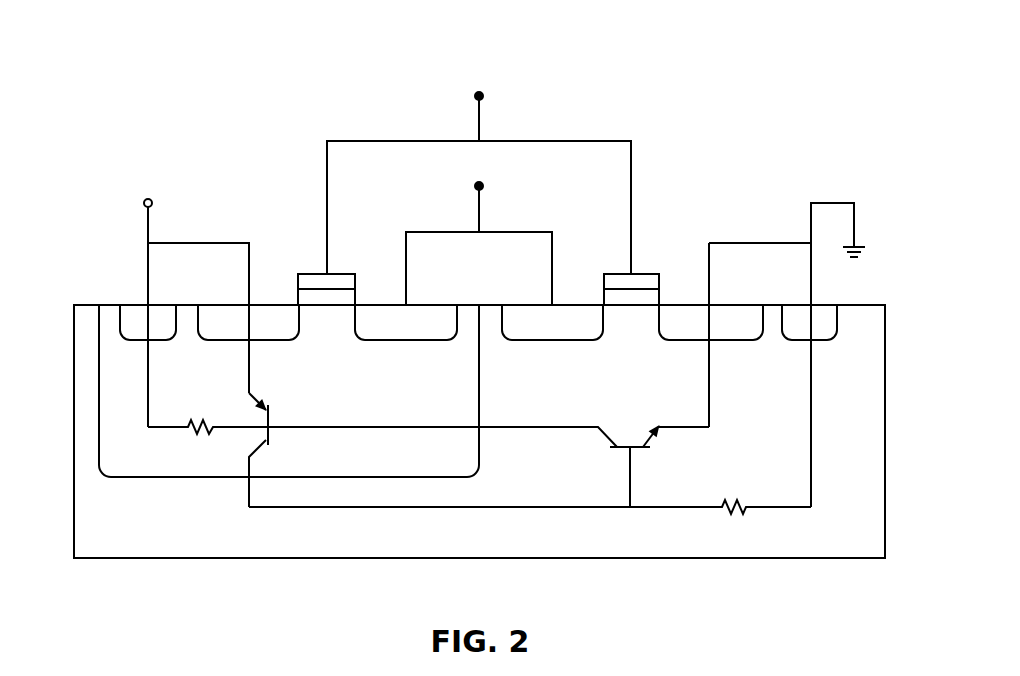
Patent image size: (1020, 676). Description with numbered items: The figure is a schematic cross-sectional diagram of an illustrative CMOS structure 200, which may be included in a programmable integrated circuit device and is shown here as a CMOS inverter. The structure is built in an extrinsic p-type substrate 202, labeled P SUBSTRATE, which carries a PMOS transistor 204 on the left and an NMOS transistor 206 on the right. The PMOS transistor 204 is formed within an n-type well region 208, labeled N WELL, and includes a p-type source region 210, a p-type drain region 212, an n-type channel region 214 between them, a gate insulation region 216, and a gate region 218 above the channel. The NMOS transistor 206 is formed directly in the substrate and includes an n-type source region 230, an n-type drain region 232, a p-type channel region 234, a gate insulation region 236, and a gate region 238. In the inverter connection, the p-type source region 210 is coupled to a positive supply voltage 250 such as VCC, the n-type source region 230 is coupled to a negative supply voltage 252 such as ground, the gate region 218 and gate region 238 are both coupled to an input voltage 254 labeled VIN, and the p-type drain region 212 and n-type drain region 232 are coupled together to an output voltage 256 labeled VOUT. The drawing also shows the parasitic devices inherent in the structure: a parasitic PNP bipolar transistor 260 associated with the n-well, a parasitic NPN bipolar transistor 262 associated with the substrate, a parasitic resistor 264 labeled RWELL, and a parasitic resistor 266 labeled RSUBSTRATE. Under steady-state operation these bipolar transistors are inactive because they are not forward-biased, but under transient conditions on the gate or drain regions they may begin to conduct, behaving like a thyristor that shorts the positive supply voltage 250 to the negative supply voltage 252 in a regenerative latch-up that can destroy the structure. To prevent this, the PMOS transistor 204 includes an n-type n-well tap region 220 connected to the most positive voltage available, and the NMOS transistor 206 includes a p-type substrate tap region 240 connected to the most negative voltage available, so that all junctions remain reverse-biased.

The CMOS structure 200 is at (462, 36).
The extrinsic p-type substrate 202 is at (120, 563).
The PMOS transistor 204 is at (120, 390).
The NMOS transistor 206 is at (838, 390).
The n-type well region 208 is at (120, 480).
The p-type source region 210 is at (260, 345).
The p-type drain region 212 is at (432, 345).
The n-type channel region 214 is at (323, 318).
The gate insulation region 216 is at (357, 300).
The gate region 218 is at (297, 283).
The n-type n-well tap region 220 is at (158, 345).
The n-type source region 230 is at (700, 343).
The n-type drain region 232 is at (540, 345).
The p-type channel region 234 is at (638, 320).
The gate insulation region 236 is at (660, 298).
The gate region 238 is at (603, 283).
The p-type substrate tap region 240 is at (802, 343).
The positive supply voltage 250 is at (140, 207).
The negative supply voltage 252 is at (872, 250).
The input voltage 254 is at (472, 102).
The output voltage 256 is at (472, 192).
The parasitic PNP bipolar transistor 260 is at (280, 437).
The parasitic NPN bipolar transistor 262 is at (622, 455).
The parasitic resistor 264 is at (200, 437).
The parasitic resistor 266 is at (732, 518).